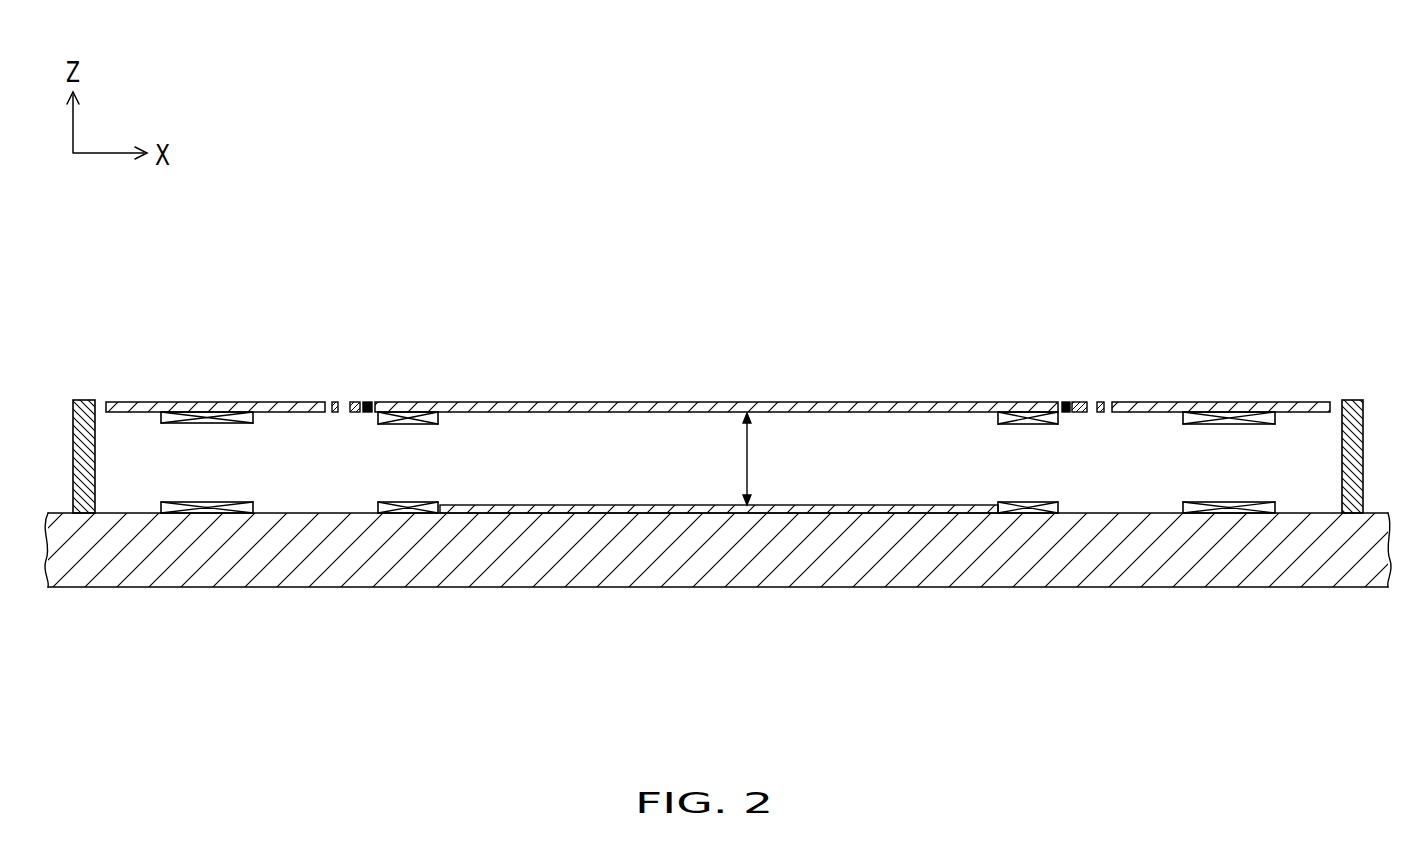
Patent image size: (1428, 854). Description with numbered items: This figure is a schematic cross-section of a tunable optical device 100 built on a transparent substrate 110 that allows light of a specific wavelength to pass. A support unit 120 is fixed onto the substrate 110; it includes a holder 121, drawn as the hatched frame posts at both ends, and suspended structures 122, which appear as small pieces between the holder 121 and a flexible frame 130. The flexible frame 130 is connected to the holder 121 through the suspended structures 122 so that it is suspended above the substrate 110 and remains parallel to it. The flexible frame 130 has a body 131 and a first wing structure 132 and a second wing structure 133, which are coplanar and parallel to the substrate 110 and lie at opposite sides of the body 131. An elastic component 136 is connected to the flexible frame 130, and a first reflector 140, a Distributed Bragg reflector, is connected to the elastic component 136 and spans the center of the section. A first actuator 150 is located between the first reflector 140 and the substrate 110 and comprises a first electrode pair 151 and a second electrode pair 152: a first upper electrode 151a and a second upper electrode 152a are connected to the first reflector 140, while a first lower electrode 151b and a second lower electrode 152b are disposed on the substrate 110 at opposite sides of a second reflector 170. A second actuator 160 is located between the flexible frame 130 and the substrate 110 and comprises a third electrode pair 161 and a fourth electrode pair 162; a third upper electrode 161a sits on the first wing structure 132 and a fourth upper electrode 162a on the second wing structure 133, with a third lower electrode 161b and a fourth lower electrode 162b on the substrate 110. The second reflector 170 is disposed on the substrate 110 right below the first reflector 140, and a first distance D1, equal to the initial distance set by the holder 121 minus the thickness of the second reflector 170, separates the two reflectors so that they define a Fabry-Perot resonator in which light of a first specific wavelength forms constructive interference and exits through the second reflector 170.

The tunable optical device 100 is at (1383, 722).
The substrate 110 is at (118, 557).
The support unit 120 is at (719, 379).
The holder 121 is at (1355, 367).
The suspended structure 122 is at (1145, 318).
The flexible frame 130 is at (718, 328).
The body 131 is at (1082, 403).
The first wing structure 132 is at (158, 403).
The second wing structure 133 is at (1275, 403).
The elastic component 136 is at (368, 403).
The first reflector 140 is at (675, 403).
The first actuator 150 is at (742, 33).
The first electrode pair 151 is at (583, 356).
The first upper electrode 151a is at (433, 418).
The first lower electrode 151b is at (396, 508).
The second electrode pair 152 is at (907, 389).
The second upper electrode 152a is at (1003, 418).
The second lower electrode 152b is at (1045, 508).
The second actuator 160 is at (742, 143).
The third electrode pair 161 is at (474, 411).
The third upper electrode 161a is at (231, 418).
The third lower electrode 161b is at (204, 508).
The fourth electrode pair 162 is at (1012, 446).
The fourth upper electrode 162a is at (1208, 418).
The fourth lower electrode 162b is at (1232, 508).
The second reflector 170 is at (597, 513).
The first distance D1 is at (760, 459).